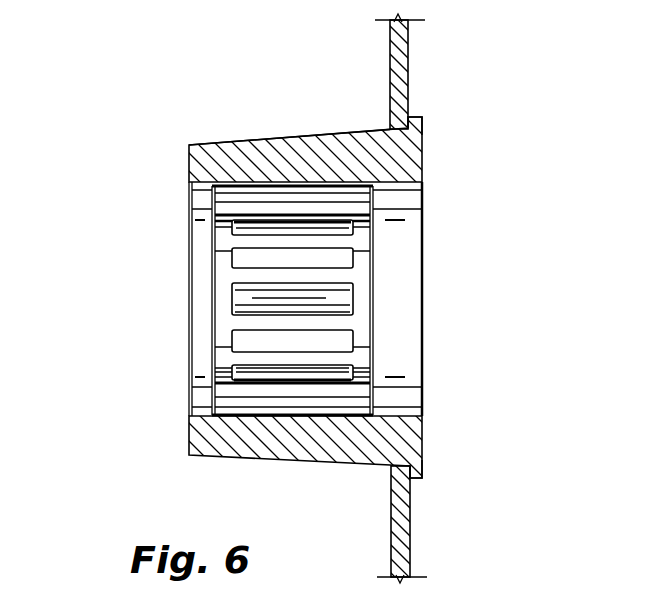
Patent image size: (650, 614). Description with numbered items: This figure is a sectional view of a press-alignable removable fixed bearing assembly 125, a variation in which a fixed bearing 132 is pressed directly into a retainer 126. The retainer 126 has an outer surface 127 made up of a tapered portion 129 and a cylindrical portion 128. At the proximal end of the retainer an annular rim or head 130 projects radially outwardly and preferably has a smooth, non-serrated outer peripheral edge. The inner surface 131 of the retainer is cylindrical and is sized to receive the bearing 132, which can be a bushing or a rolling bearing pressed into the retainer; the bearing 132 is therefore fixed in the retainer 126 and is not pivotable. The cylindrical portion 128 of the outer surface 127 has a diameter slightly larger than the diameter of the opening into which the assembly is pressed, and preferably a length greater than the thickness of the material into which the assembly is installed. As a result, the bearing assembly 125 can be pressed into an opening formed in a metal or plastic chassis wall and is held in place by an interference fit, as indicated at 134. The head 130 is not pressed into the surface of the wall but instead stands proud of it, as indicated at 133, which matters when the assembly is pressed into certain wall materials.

The bearing assembly 125 is at (148, 70).
The retainer 126 is at (277, 118).
The outer surface 127 is at (241, 140).
The cylindrical portion 128 is at (390, 125).
The tapered portion 129 is at (313, 130).
The annular rim or head 130 is at (425, 471).
The inner surface 131 is at (405, 237).
The fixed bearing 132 is at (375, 310).
The head standing proud 133 is at (420, 115).
The interference fit 134 is at (386, 470).